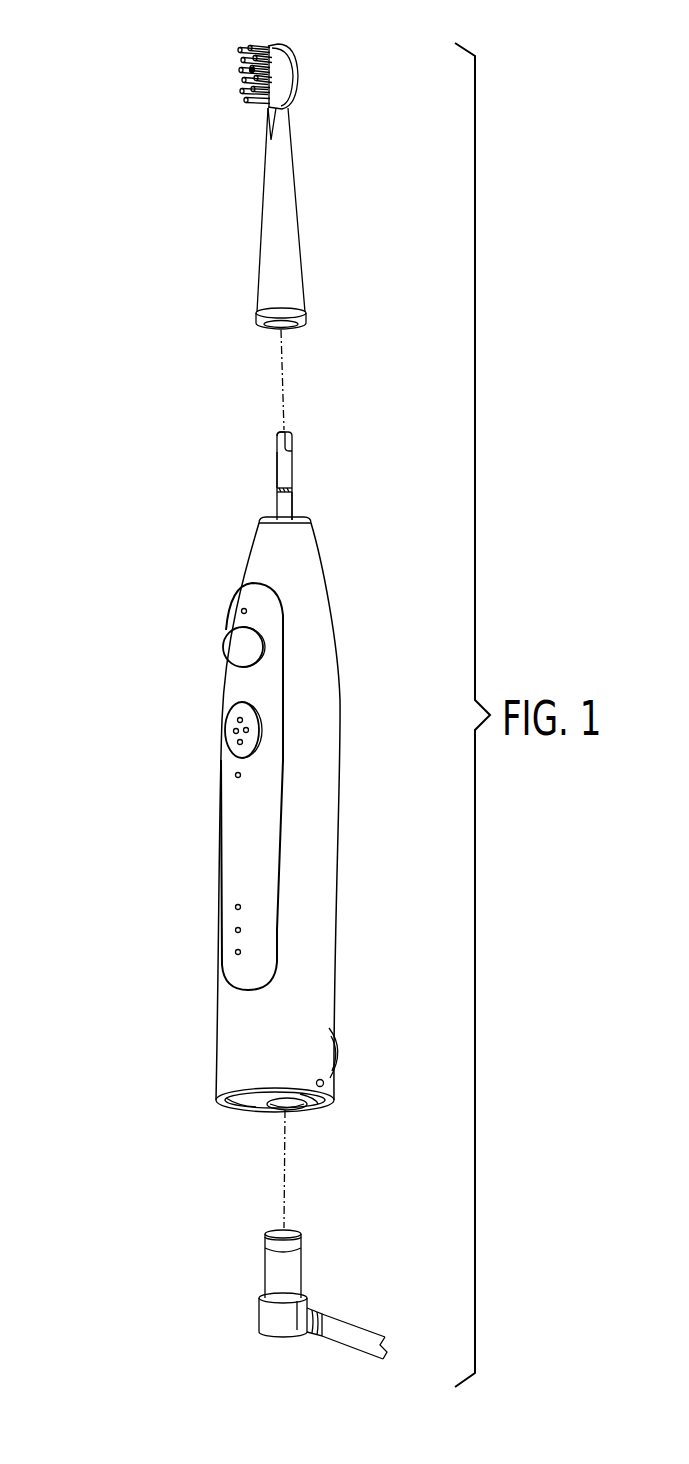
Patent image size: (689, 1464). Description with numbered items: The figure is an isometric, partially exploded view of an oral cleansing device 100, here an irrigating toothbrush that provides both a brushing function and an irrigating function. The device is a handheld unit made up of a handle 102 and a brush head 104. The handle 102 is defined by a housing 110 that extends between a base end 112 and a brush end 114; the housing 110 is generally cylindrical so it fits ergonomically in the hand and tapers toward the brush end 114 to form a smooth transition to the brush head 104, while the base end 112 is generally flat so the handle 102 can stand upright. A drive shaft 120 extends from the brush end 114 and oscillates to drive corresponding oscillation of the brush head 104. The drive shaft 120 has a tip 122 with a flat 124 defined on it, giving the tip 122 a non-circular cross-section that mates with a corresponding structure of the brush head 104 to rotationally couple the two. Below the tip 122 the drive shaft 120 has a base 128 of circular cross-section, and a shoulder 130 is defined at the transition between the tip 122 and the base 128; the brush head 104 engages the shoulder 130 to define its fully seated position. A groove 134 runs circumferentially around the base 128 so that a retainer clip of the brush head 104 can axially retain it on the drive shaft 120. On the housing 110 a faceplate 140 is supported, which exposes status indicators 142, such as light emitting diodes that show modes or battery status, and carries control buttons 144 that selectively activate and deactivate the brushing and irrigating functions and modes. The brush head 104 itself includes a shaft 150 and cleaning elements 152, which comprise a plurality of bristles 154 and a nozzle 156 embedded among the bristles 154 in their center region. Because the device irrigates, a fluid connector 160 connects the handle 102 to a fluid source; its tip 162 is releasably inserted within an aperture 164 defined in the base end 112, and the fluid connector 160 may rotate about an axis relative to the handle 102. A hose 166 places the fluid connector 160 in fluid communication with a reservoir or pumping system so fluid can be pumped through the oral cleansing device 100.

The oral cleansing device 100 is at (128, 597).
The handle 102 is at (310, 843).
The brush head 104 is at (282, 196).
The housing 110 is at (240, 1042).
The base end 112 is at (240, 1098).
The brush end 114 is at (303, 545).
The drive shaft 120 is at (285, 468).
The tip 122 is at (292, 442).
The flat 124 is at (278, 433).
The base 128 is at (287, 507).
The shoulder 130 is at (277, 458).
The groove 134 is at (277, 492).
The faceplate 140 is at (243, 845).
The status indicators 142 is at (220, 918).
The control buttons 144 is at (227, 647).
The shaft 150 is at (278, 288).
The cleaning elements 152 is at (205, 76).
The bristles 154 is at (243, 95).
The nozzle 156 is at (250, 70).
The fluid connector 160 is at (260, 1318).
The tip 162 is at (303, 1272).
The aperture 164 is at (277, 1113).
The hose 166 is at (352, 1340).